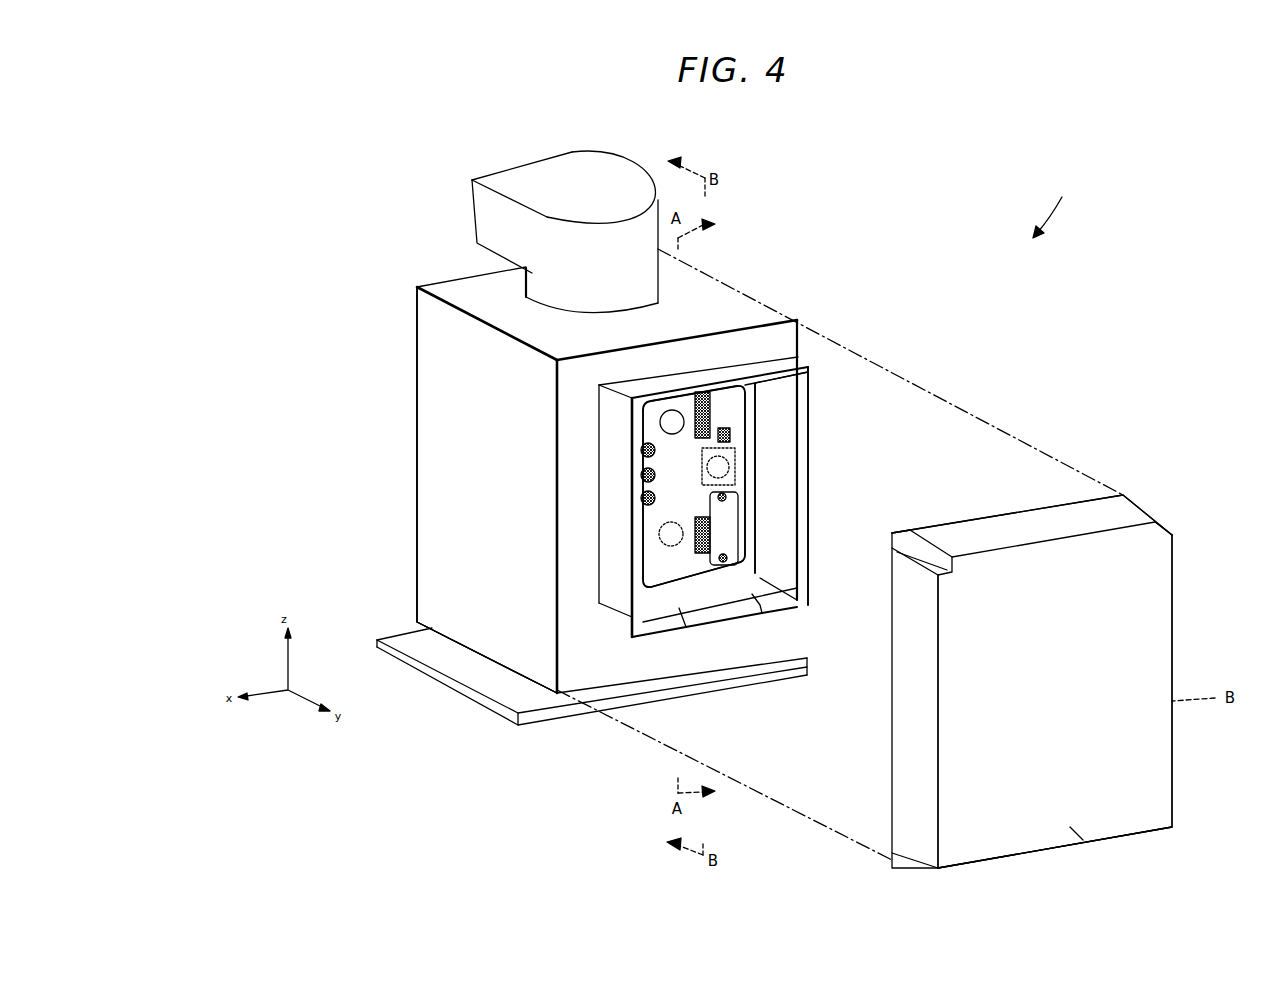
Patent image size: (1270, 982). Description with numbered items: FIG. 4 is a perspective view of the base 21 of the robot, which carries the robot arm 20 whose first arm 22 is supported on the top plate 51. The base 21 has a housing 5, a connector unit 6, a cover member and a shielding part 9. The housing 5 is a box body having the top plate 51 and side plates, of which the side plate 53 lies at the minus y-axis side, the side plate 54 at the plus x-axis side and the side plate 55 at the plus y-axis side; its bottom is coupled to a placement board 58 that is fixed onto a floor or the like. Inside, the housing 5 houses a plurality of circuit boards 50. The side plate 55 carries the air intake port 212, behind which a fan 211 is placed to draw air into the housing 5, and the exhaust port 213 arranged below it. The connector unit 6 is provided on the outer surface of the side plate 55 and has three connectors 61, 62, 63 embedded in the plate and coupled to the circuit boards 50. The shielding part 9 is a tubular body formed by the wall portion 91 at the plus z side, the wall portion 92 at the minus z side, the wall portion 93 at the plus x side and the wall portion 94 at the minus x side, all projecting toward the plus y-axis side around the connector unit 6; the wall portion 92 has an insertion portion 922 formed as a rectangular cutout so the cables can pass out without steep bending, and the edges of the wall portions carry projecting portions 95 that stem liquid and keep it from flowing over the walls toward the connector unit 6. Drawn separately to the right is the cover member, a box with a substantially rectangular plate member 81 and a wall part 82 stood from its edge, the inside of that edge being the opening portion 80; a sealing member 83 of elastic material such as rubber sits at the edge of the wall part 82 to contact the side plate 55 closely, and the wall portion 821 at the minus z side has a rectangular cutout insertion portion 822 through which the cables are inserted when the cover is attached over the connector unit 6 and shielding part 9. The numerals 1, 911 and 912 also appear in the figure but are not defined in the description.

The robot system 1 is at (1053, 205).
The housing 5 is at (432, 278).
The connector unit 6 is at (677, 465).
The shielding part 9 is at (812, 421).
The robot arm 20 is at (540, 176).
The base 21 is at (415, 305).
The first arm 22 is at (582, 188).
The circuit boards 50 is at (462, 512).
The top plate 51 is at (482, 285).
The side plate 53 is at (415, 350).
The side plate 54 is at (447, 395).
The side plate 55 is at (570, 613).
The placement board 58 is at (507, 690).
The connector 61 is at (643, 448).
The connector 62 is at (710, 388).
The connector 63 is at (770, 425).
The opening portion 80 is at (1003, 540).
The plate member 81 is at (1135, 624).
The wall part 82 is at (1090, 513).
The sealing member 83 is at (890, 571).
The wall portion 91 is at (725, 240).
The wall portion 92 is at (775, 597).
The wall portion 93 is at (615, 525).
The wall portion 94 is at (760, 462).
The projecting portions 95 is at (797, 382).
The fan 211 is at (812, 396).
The air intake port 212 is at (762, 486).
The exhaust port 213 is at (658, 543).
The wall portion 821 is at (1003, 860).
The insertion portion 822 is at (1083, 840).
The round connector 911 is at (660, 410).
The small connector 912 is at (723, 427).
The insertion portion 922 is at (713, 612).